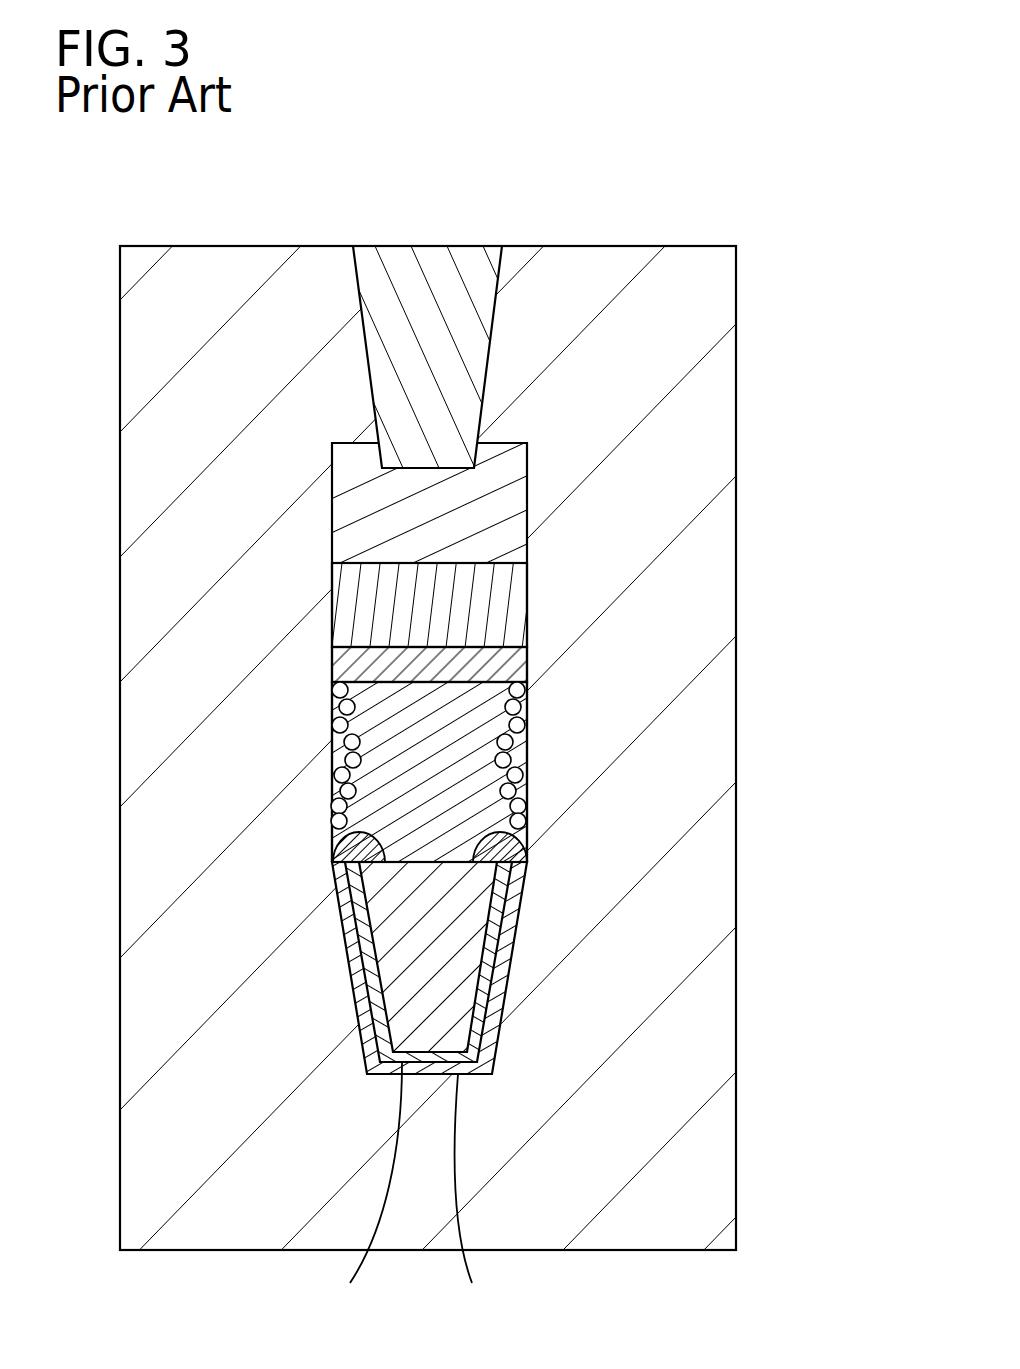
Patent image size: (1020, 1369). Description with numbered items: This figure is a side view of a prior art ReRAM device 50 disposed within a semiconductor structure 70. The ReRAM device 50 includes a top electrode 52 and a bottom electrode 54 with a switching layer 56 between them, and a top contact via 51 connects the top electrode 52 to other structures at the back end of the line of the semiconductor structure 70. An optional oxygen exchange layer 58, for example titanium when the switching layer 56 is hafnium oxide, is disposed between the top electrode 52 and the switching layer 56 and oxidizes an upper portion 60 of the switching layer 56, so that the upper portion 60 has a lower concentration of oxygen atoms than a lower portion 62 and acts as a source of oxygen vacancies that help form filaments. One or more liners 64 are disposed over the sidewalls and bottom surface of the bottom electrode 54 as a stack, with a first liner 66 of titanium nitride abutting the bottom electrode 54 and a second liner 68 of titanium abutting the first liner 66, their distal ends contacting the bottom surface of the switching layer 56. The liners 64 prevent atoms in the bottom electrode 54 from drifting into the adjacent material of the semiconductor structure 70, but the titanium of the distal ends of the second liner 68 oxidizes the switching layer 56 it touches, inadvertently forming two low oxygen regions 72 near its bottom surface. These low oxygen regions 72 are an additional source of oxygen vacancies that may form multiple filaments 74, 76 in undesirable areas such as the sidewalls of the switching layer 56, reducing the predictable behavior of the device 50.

The ReRAM device 50 is at (504, 162).
The top contact via 51 is at (477, 260).
The top electrode 52 is at (377, 535).
The bottom electrode 54 is at (404, 983).
The switching layer 56 is at (573, 860).
The oxygen exchange layer 58 is at (357, 615).
The upper portion of the switching layer 60 is at (358, 670).
The lower portion of the switching layer 62 is at (403, 745).
The liners 64 is at (500, 1052).
The first liner 66 is at (359, 1188).
The second liner 68 is at (479, 1194).
The semiconductor structure 70 is at (737, 1135).
The low oxygen regions 72 is at (354, 848).
The filament 74 is at (337, 803).
The filament 76 is at (509, 758).